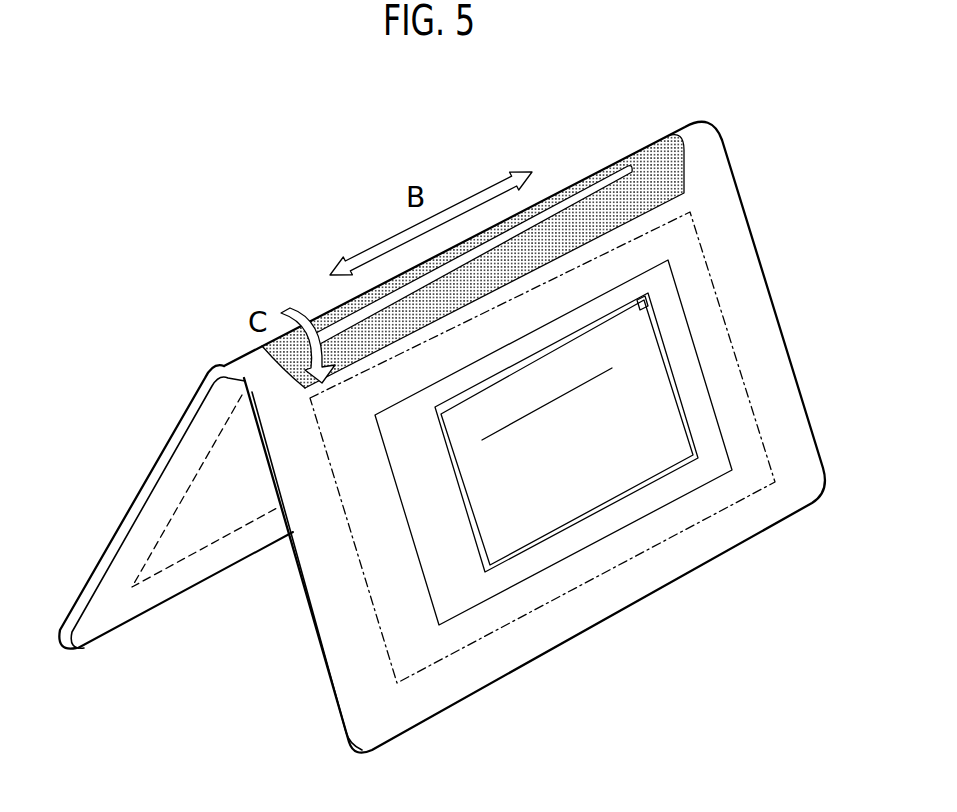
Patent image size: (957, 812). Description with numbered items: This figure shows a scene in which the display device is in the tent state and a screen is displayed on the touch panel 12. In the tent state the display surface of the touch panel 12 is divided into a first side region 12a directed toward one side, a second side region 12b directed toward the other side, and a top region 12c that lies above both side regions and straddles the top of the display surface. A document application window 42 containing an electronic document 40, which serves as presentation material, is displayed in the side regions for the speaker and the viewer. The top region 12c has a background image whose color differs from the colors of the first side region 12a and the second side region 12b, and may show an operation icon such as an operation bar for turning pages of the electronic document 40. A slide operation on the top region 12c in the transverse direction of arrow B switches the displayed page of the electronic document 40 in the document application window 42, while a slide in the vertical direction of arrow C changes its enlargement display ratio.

The touch panel 12 is at (690, 290).
The first side region 12a is at (182, 392).
The second side region 12b is at (717, 370).
The top region 12c is at (643, 181).
The electronic document 40 is at (511, 520).
The document application window 42 is at (542, 355).